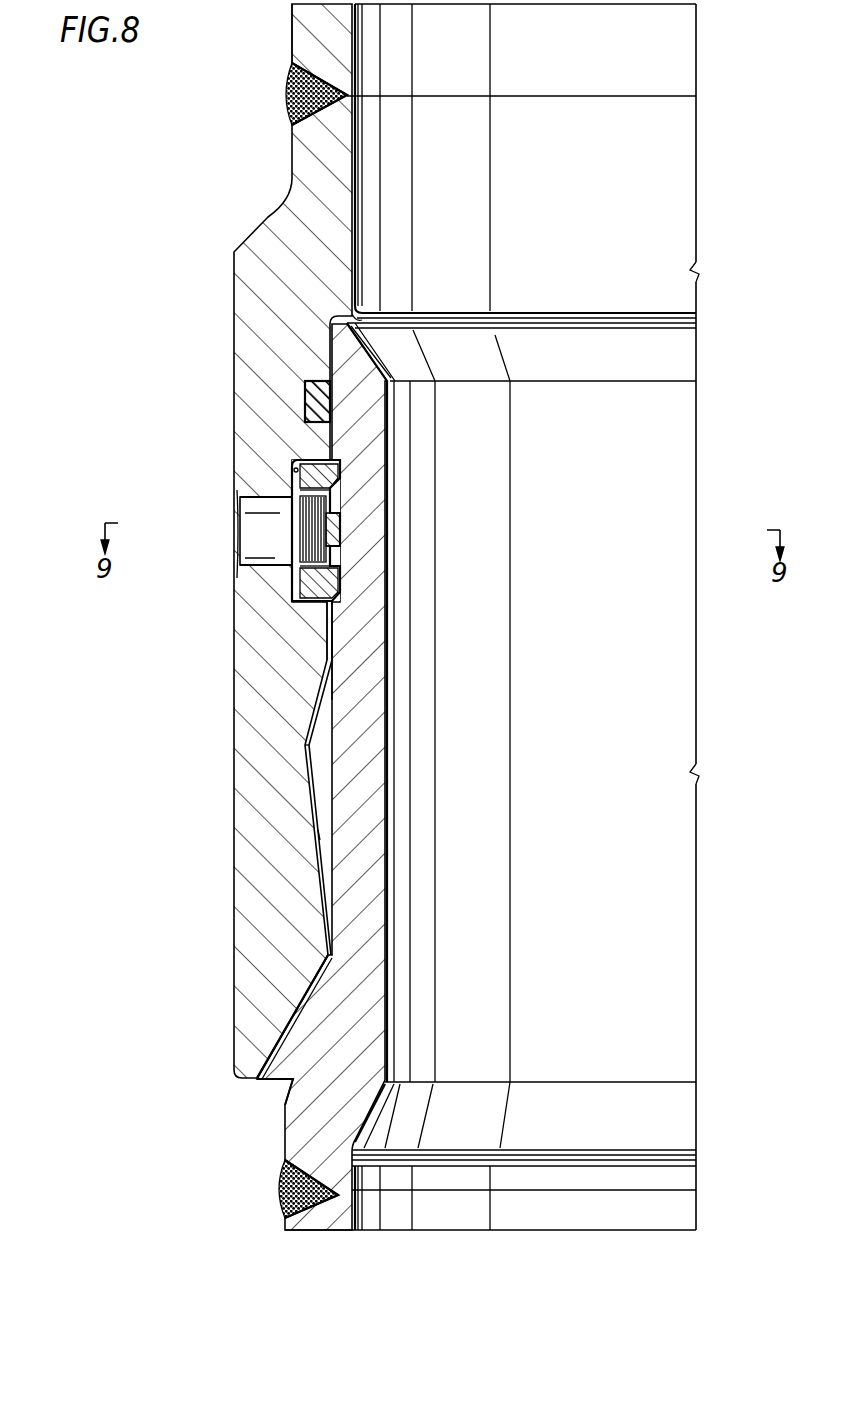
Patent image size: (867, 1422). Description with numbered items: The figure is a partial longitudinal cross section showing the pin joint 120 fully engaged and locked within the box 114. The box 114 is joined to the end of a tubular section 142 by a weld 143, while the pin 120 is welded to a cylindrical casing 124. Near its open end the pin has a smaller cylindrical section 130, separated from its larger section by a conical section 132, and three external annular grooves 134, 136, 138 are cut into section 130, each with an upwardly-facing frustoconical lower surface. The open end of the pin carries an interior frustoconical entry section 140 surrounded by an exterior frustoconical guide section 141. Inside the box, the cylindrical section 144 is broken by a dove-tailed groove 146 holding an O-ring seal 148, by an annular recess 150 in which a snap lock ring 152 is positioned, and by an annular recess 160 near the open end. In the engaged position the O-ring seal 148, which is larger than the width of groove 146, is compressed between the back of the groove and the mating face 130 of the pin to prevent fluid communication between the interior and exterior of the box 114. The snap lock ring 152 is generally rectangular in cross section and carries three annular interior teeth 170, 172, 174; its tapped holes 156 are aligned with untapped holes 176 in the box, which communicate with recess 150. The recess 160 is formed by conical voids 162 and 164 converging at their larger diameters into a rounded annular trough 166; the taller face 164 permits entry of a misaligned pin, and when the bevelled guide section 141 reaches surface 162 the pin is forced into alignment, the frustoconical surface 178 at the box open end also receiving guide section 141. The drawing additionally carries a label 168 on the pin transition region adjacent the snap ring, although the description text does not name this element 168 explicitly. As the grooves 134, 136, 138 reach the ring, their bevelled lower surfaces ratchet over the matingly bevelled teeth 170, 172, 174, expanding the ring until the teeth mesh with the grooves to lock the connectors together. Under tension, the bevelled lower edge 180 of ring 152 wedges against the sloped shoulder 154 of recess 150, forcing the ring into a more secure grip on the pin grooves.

The box 114 is at (236, 283).
The pin joint 120 is at (682, 947).
The cylindrical casing 124 is at (283, 1222).
The cylindrical section 130 is at (330, 816).
The conical section 132 is at (293, 1088).
The external annular groove 134 is at (345, 630).
The external annular groove 136 is at (340, 548).
The external annular groove 138 is at (344, 490).
The frustoconical entry section 140 is at (560, 345).
The frustoconical guide section 141 is at (352, 334).
The tubular section 142 is at (290, 36).
The weld 143 is at (288, 100).
The cylindrical section 144 is at (358, 662).
The dove-tailed groove 146 is at (300, 410).
The O-ring seal 148 is at (306, 385).
The annular recess 150 is at (292, 470).
The snap lock ring 152 is at (330, 592).
The bevelled lower annular shoulder 154 is at (330, 646).
The tapped holes 156 is at (300, 548).
The annular recess 160 is at (316, 745).
The conical void 162 is at (310, 712).
The conical void 164 is at (320, 830).
The annular rounded trough 166 is at (308, 748).
The conical surface 168 is at (390, 408).
The interior tooth 170 is at (345, 585).
The interior tooth 172 is at (345, 530).
The interior tooth 174 is at (342, 465).
The untapped hole 176 is at (262, 516).
The frustoconical surface 178 is at (293, 1013).
The bevelled lower edge 180 is at (340, 604).